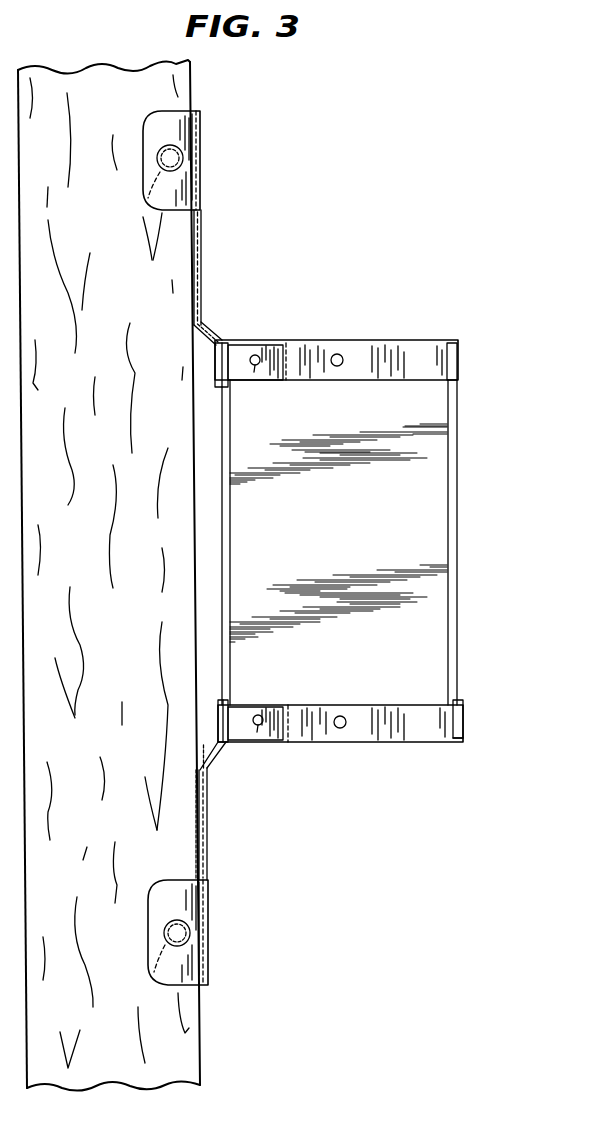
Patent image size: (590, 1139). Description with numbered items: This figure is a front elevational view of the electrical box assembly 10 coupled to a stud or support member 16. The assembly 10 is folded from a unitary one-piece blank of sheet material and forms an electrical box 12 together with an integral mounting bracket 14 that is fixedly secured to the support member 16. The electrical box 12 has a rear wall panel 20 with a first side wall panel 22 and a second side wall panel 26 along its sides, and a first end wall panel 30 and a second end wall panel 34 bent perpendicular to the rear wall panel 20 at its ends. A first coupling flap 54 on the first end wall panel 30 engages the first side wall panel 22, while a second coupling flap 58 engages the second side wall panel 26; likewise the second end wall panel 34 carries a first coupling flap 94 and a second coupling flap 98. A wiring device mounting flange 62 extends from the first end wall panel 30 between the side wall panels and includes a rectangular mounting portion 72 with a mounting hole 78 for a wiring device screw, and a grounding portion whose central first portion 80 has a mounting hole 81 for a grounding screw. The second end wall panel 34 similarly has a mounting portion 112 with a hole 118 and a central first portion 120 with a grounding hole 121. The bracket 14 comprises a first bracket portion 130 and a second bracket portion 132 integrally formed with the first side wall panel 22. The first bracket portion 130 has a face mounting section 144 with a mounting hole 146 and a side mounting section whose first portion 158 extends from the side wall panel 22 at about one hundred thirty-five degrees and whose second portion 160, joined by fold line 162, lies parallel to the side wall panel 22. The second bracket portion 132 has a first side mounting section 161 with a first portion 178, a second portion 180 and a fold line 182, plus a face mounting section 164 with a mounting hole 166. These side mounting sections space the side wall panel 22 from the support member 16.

The electrical box assembly 10 is at (364, 248).
The electrical box 12 is at (319, 539).
The mounting bracket 14 is at (188, 212).
The support member 16 is at (193, 90).
The rear wall panel 20 is at (352, 544).
The first side wall panel 22 is at (222, 527).
The second side wall panel 26 is at (457, 515).
The first end wall panel 30 is at (315, 359).
The second end wall panel 34 is at (327, 719).
The first coupling flap 54 is at (217, 365).
The second coupling flap 58 is at (457, 357).
The wiring device mounting flange 62 is at (393, 378).
The mounting portion 72 is at (434, 368).
The mounting hole 78 is at (340, 366).
The first portion 80 is at (267, 381).
The mounting hole 81 is at (255, 367).
The first coupling flap 94 is at (218, 710).
The second coupling flap 98 is at (462, 730).
The mounting portion 112 is at (436, 731).
The mounting hole 118 is at (345, 726).
The first portion 120 is at (280, 700).
The mounting hole 121 is at (258, 714).
The first bracket portion 130 is at (183, 152).
The second bracket portion 132 is at (209, 952).
The face mounting section 144 is at (160, 112).
The mounting hole 146 is at (148, 205).
The first portion 158 is at (202, 335).
The second portion 160 is at (193, 262).
The first side mounting section 161 is at (197, 852).
The fold line 162 is at (205, 325).
The face mounting section 164 is at (185, 985).
The mounting hole 166 is at (163, 945).
The first portion 178 is at (212, 757).
The second portion 180 is at (208, 830).
The fold line 182 is at (208, 777).